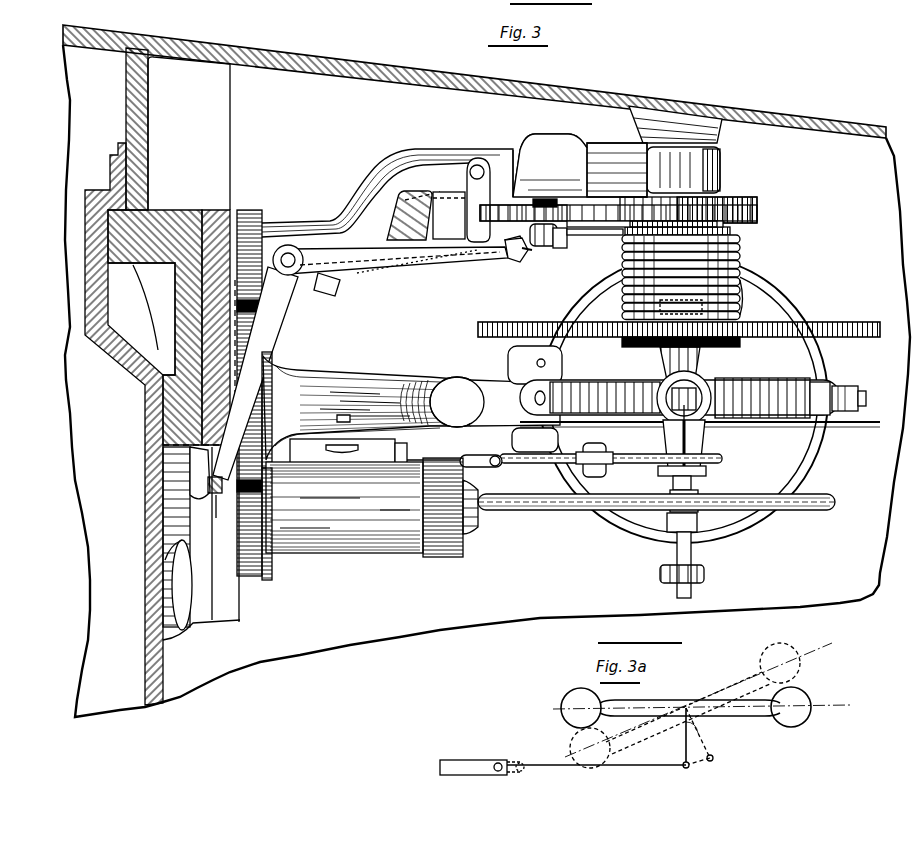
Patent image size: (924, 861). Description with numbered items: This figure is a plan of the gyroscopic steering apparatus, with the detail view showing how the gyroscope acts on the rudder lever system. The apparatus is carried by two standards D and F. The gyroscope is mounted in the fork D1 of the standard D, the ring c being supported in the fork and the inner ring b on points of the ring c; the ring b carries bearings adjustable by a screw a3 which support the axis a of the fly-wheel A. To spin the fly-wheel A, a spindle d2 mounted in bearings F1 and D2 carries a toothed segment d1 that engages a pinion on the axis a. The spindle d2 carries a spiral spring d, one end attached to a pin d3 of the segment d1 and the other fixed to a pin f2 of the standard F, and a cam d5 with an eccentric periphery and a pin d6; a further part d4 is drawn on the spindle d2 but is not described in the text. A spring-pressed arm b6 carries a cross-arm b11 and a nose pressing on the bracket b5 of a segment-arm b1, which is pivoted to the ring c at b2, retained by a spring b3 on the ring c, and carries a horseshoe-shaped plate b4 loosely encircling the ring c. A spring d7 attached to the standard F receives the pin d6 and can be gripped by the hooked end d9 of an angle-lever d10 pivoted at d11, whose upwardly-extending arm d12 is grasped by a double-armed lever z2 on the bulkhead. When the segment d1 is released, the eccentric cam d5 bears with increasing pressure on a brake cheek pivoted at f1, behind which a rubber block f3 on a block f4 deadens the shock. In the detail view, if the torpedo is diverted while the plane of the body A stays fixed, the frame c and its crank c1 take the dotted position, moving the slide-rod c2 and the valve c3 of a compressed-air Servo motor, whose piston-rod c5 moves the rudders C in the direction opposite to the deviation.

In FIG. 3, the standard F is at (454, 185).
In FIG. 3, the bearing F1 is at (720, 170).
In FIG. 3, the pivot of brake cheek f1 is at (480, 162).
In FIG. 3, the pin of standard F f2 is at (553, 198).
In FIG. 3, the rubber block f3 is at (449, 215).
In FIG. 3, the block f4 is at (413, 215).
In FIG. 3, the spiral spring d is at (738, 256).
In FIG. 3, the toothed segment d1 is at (524, 328).
In FIG. 3, the spindle d2 is at (662, 360).
In FIG. 3, the pin of segment d3 is at (757, 290).
In FIG. 3, the bar d4 is at (758, 209).
In FIG. 3, the cam d5 is at (507, 239).
In FIG. 3, the pin of cam d6 is at (645, 247).
In FIG. 3, the spring d7 is at (392, 272).
In FIG. 3, the hooked end d9 is at (510, 258).
In FIG. 3, the angle-lever d10 is at (444, 266).
In FIG. 3, the pivot of angle-lever d11 is at (300, 288).
In FIG. 3, the upwardly-extending arm d12 is at (244, 383).
In FIG. 3, the double-armed lever z2 is at (220, 517).
In FIG. 3, the standard D is at (366, 410).
In FIG. 3, the fork of standard D D1 is at (481, 402).
In FIG. 3, the bearing D2 is at (733, 363).
In FIG. 3, the cylinder C is at (370, 509).
In FIG. 3, the inner ring b is at (732, 537).
In FIG. 3, the segment-arm b1 is at (763, 422).
In FIG. 3, the pivot of segment-arm b2 is at (836, 420).
In FIG. 3, the spring b3 is at (590, 455).
In FIG. 3, the horseshoe-shaped plate b4 is at (538, 370).
In FIG. 3, the bracket b5 is at (663, 440).
In FIG. 3, the spring-pressed arm b6 is at (688, 453).
In FIG. 3, the cross-arm b11 is at (700, 470).
In FIG. 3, the axis a is at (688, 480).
In FIG. 3, the adjusting screw a3 is at (677, 553).
In FIG. 3, the ring c is at (767, 380).
In FIG. 3A, the crank c1 is at (694, 735).
In FIG. 3, the slide-rod c2 is at (627, 465).
In FIG. 3A, the slide-rod c2 is at (635, 760).
In FIG. 3, the valve c3 is at (490, 468).
In FIG. 3A, the valve c3 is at (485, 760).
In FIG. 3, the piston-rod c5 is at (543, 510).
In FIG. 3A, the fly-wheel A is at (792, 717).